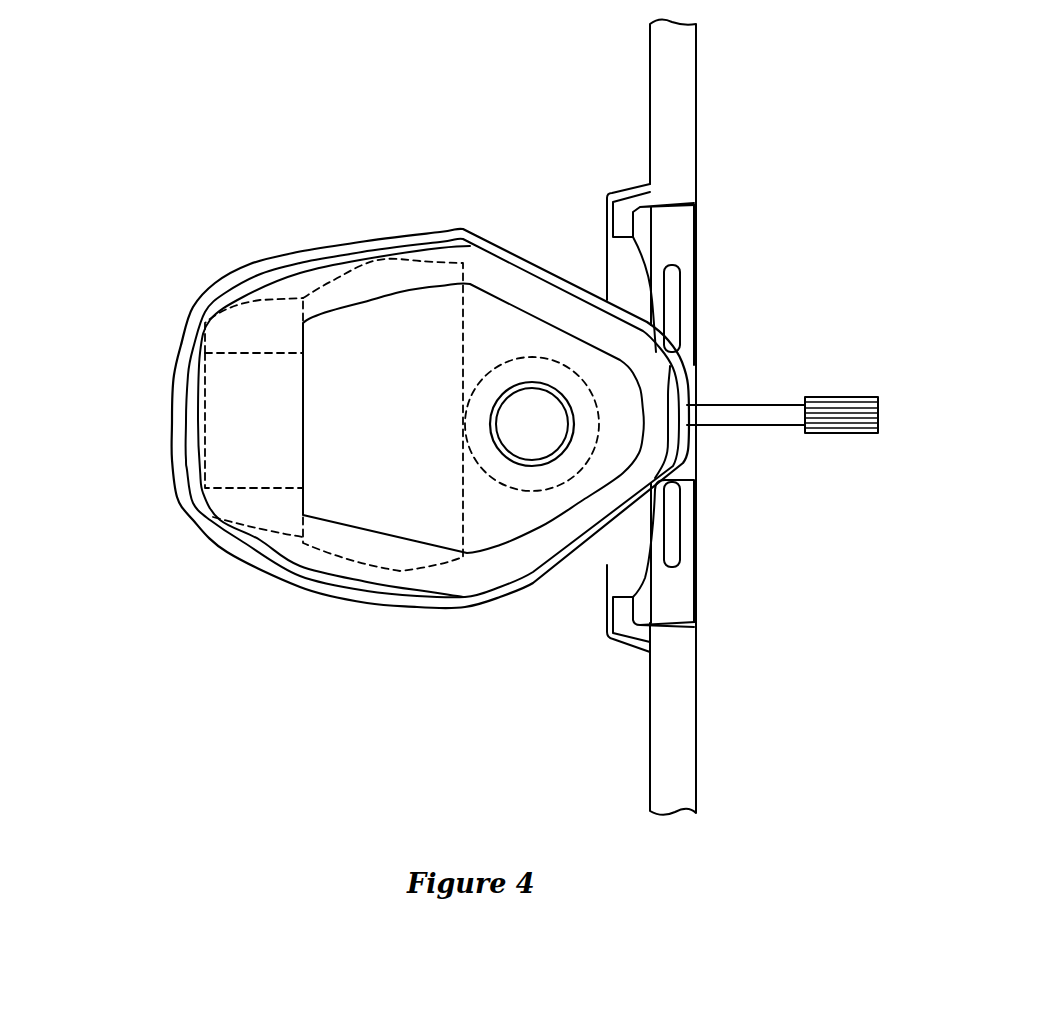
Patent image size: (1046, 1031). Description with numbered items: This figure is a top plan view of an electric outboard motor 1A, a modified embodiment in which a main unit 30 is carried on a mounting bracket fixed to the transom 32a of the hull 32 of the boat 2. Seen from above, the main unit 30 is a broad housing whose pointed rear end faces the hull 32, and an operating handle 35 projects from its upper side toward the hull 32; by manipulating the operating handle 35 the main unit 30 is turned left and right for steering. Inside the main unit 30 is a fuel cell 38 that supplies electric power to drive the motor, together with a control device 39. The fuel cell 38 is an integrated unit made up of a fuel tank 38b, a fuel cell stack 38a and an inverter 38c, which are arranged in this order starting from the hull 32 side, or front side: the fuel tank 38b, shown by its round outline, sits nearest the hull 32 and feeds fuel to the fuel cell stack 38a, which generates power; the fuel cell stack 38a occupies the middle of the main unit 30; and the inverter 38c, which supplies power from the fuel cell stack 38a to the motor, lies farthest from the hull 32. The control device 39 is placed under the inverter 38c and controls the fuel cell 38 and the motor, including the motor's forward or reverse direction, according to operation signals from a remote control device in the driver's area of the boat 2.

The electric outboard motor 1A is at (582, 55).
The main unit 30 is at (240, 580).
The fuel cell 38 is at (296, 285).
The fuel cell stack 38a is at (381, 315).
The fuel tank 38b is at (533, 373).
The inverter 38c is at (240, 345).
The control device 39 is at (213, 438).
The operating handle 35 is at (753, 403).
The hull 32 is at (697, 416).
The transom 32a is at (678, 122).
The boat 2 is at (900, 467).